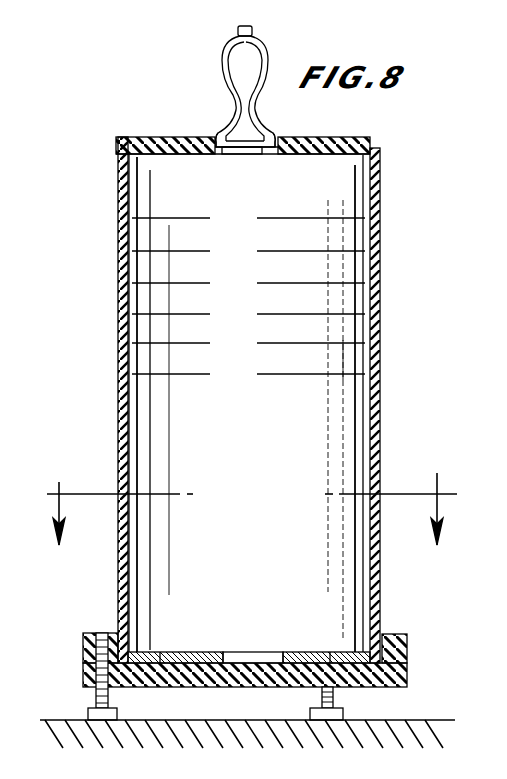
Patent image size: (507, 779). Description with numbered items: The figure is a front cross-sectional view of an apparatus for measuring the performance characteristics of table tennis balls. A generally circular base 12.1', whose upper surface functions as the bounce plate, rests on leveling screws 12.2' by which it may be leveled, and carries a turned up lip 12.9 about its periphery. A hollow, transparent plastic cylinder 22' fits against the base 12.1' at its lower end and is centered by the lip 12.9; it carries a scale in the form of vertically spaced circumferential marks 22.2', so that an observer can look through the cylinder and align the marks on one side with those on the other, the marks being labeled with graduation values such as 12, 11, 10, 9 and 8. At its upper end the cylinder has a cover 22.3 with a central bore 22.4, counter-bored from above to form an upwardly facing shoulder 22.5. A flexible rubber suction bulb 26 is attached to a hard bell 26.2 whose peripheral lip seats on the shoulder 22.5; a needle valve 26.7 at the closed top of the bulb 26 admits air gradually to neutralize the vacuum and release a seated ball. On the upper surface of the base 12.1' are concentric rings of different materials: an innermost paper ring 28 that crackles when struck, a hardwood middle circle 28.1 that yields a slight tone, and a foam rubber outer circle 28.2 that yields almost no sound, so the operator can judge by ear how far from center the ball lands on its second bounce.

The hollow transparent plastic cylinder 22' is at (273, 400).
The cover 22.3 is at (370, 137).
The central bore 22.4 is at (258, 154).
The upwardly facing shoulder 22.5 is at (240, 152).
The flexible rubber suction bulb 26 is at (224, 60).
The needle valve 26.7 is at (238, 30).
The bell 26.2 is at (222, 130).
The circumferential marks 22.2' is at (285, 393).
The innermost ring 28 is at (212, 652).
The middle circle 28.1 is at (170, 652).
The outer circle 28.2 is at (358, 652).
The base 12.1' is at (286, 660).
The turned up lip 12.9 is at (400, 634).
The leveling screws 12.2' is at (215, 676).
The section line 10-10 / graduation 10 is at (242, 410).
The graduation 12 is at (248, 219).
The graduation 11 is at (248, 252).
The graduation 9 is at (248, 345).
The graduation 8 is at (248, 344).